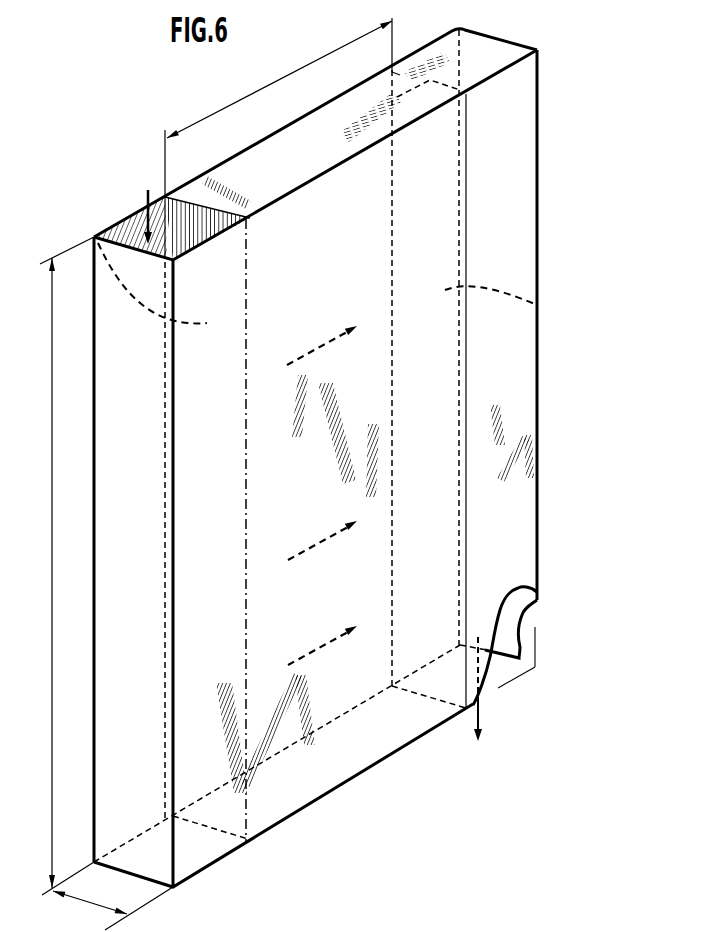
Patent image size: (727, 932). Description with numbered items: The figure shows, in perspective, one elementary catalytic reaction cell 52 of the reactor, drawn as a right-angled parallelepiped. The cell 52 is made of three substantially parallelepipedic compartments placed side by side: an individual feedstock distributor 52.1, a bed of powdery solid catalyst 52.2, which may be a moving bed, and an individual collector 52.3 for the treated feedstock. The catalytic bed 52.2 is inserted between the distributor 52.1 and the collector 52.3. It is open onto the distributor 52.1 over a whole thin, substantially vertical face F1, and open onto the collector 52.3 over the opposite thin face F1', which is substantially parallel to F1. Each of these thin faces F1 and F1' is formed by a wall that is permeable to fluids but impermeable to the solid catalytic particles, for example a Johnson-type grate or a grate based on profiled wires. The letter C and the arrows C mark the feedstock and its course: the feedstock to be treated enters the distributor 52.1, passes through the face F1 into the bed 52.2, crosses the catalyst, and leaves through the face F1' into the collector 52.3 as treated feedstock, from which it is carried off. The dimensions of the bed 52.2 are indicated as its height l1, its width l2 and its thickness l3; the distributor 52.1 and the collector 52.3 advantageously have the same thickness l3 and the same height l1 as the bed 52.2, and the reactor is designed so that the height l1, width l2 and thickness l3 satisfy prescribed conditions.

The elementary reaction cell 52 is at (546, 782).
The individual feedstock distributor 52.1 is at (190, 818).
The catalytic bed 52.2 is at (340, 735).
The individual collector of the treated feedstock 52.3 is at (505, 490).
The feedstock and course of the feedstock C is at (313, 468).
The thin substantially vertical face F1 is at (130, 252).
The thin face parallel to F1 F1' is at (519, 309).
The height l1 is at (67, 566).
The width l2 is at (282, 138).
The thickness l3 is at (113, 903).